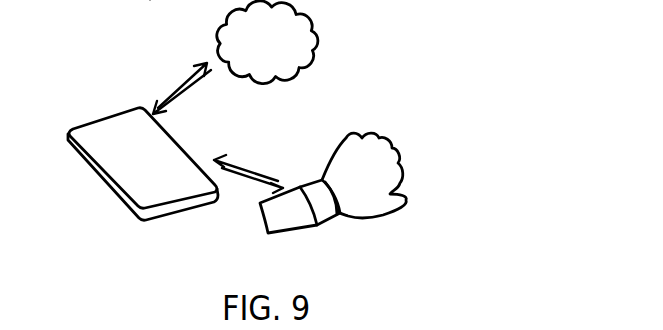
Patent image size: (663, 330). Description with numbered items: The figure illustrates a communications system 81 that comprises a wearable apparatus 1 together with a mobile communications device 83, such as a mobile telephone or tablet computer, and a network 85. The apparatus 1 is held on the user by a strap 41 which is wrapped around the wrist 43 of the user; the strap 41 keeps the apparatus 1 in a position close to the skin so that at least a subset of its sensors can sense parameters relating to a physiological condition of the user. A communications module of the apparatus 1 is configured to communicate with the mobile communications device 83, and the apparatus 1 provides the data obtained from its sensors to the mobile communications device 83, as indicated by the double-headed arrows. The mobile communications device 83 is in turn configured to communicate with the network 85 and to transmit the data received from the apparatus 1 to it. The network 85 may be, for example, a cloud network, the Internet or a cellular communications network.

The apparatus 1 is at (332, 215).
The strap 41 is at (310, 218).
The wrist 43 is at (293, 208).
The communications system 81 is at (380, 92).
The mobile communications device 83 is at (157, 191).
The network 85 is at (284, 50).